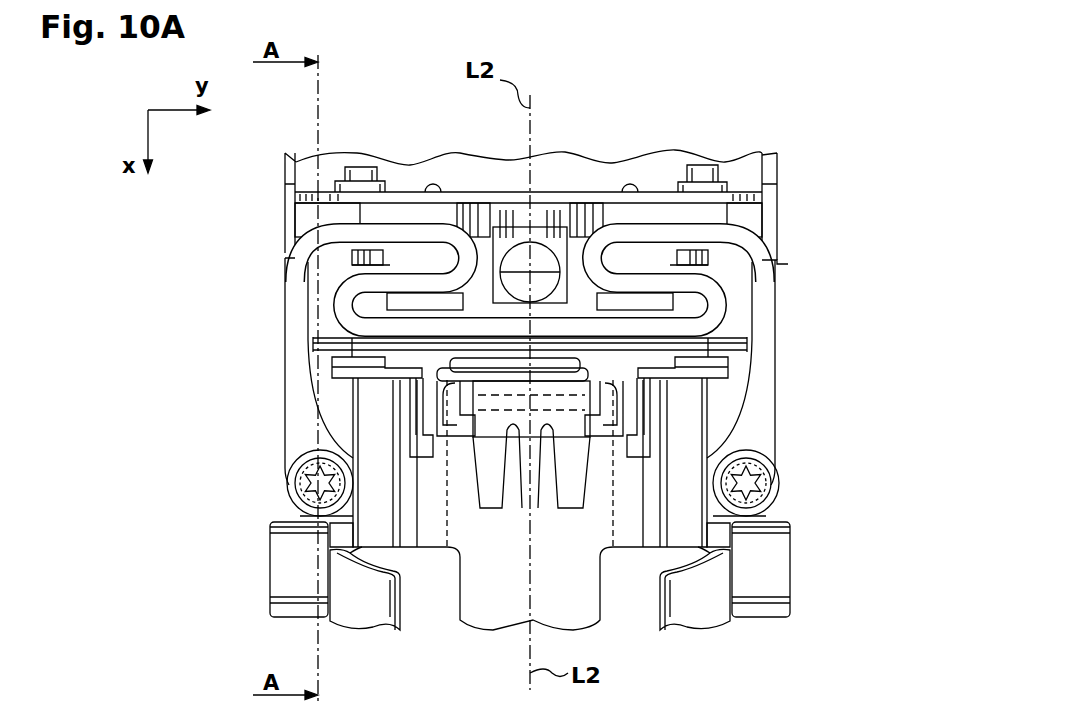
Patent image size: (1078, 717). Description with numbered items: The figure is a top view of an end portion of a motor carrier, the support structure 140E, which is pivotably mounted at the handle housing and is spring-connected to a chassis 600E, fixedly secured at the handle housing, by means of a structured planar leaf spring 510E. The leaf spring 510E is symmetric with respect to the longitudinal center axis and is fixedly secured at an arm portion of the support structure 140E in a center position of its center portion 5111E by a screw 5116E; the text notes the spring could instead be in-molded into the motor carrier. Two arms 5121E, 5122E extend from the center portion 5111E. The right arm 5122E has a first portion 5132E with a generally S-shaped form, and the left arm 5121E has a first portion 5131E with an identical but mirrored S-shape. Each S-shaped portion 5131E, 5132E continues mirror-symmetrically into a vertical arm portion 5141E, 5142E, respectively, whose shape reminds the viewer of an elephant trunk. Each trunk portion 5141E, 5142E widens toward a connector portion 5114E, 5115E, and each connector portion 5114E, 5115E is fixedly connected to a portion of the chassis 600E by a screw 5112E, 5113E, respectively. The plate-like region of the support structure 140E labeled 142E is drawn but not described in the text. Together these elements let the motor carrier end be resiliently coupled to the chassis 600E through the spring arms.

The structured leaf spring 510E is at (805, 407).
The center portion 5111E is at (543, 238).
The screw 5112E is at (298, 472).
The screw 5113E is at (770, 482).
The connector portion 5114E is at (300, 510).
The connector portion 5115E is at (767, 508).
The screw 5116E is at (552, 257).
The arm 5121E is at (270, 290).
The arm 5122E is at (792, 280).
The first portion 5131E is at (400, 237).
The first portion 5132E is at (667, 237).
The vertical arm portion 5141E is at (300, 367).
The vertical arm portion 5142E is at (767, 350).
The support structure 140E is at (745, 158).
The bracket plate 142E is at (757, 216).
The chassis 600E is at (770, 567).